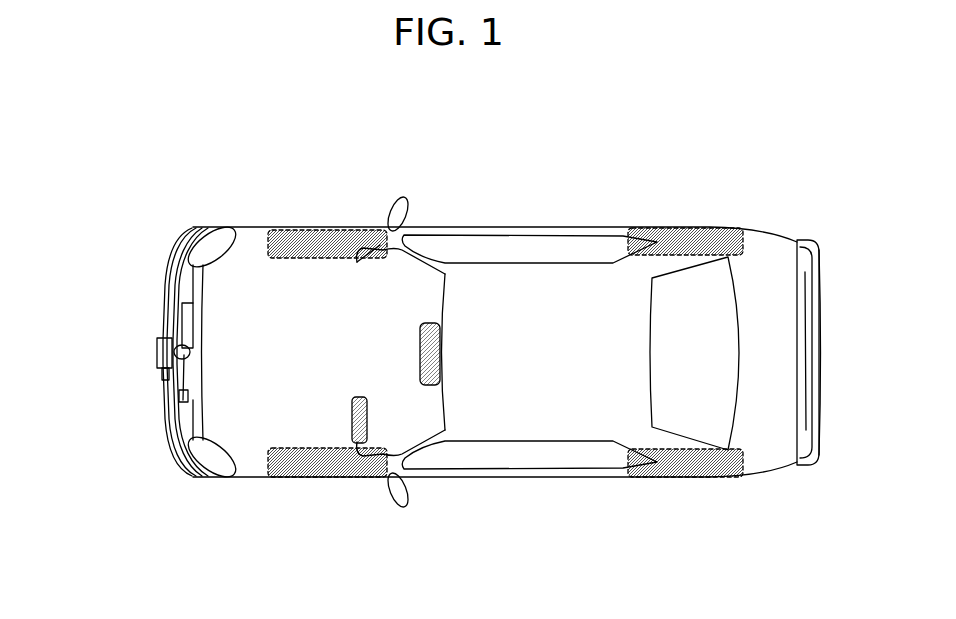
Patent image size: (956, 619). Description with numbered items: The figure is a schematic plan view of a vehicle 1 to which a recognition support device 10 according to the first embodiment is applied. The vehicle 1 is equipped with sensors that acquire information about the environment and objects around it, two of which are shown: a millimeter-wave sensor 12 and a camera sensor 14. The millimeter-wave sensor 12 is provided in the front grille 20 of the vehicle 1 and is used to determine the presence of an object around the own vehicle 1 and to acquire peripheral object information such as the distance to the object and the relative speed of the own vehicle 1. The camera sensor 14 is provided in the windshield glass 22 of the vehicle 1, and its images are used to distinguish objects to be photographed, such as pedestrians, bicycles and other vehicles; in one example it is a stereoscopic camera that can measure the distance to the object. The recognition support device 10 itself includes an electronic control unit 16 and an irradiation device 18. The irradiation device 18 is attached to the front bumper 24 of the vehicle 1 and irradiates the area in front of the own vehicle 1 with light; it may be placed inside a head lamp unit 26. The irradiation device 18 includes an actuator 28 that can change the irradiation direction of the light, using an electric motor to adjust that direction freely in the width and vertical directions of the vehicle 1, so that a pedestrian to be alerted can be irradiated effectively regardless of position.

The vehicle 1 is at (656, 206).
The recognition support device 10 is at (360, 383).
The millimeter-wave sensor 12 is at (244, 433).
The camera sensor 14 is at (437, 372).
The electronic control unit (ECU) 16 is at (362, 430).
The irradiation device 18 is at (145, 356).
The front grille 20 is at (187, 313).
The windshield glass 22 is at (413, 285).
The front bumper 24 is at (167, 268).
The head lamp unit 26 is at (207, 248).
The actuator 28 is at (163, 375).